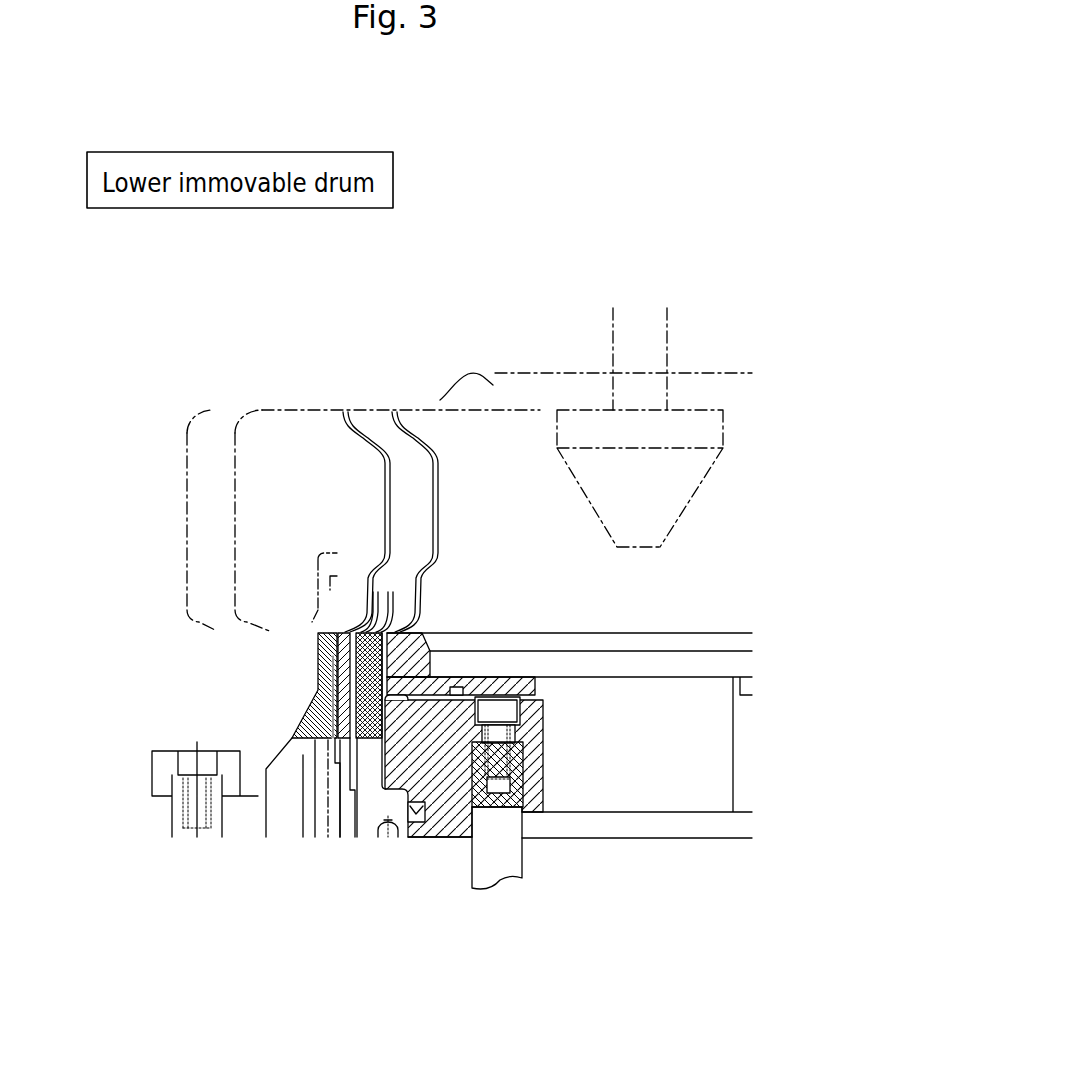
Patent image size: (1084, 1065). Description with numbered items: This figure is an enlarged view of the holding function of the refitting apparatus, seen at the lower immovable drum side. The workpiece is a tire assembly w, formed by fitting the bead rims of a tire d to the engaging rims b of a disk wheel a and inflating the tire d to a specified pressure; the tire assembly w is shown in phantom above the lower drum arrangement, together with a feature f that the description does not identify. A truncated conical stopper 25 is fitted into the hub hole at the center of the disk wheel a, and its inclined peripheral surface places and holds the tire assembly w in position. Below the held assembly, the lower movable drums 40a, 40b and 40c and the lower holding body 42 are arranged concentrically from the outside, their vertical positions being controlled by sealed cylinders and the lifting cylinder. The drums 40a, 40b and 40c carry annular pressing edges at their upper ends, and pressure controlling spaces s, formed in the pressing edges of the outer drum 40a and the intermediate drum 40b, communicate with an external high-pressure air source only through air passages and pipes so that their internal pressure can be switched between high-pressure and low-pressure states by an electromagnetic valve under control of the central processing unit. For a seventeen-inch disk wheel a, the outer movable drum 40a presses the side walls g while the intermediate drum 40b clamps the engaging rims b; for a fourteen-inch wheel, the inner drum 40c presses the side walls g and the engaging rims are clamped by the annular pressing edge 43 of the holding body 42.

The tire assembly w is at (247, 417).
The side walls g is at (300, 407).
The engaging rims b is at (393, 413).
The disk wheel a is at (442, 508).
The flange of workpiece f is at (187, 492).
The tire d is at (240, 618).
The pressure controlling spaces s is at (318, 678).
The outer lower movable drum 40a is at (312, 716).
The intermediate lower movable drum 40b is at (345, 712).
The inner lower movable drum 40c is at (372, 738).
The lower holding body 42 is at (443, 797).
The annular pressing edge 43 is at (503, 560).
The truncated conical stopper 25 is at (655, 502).